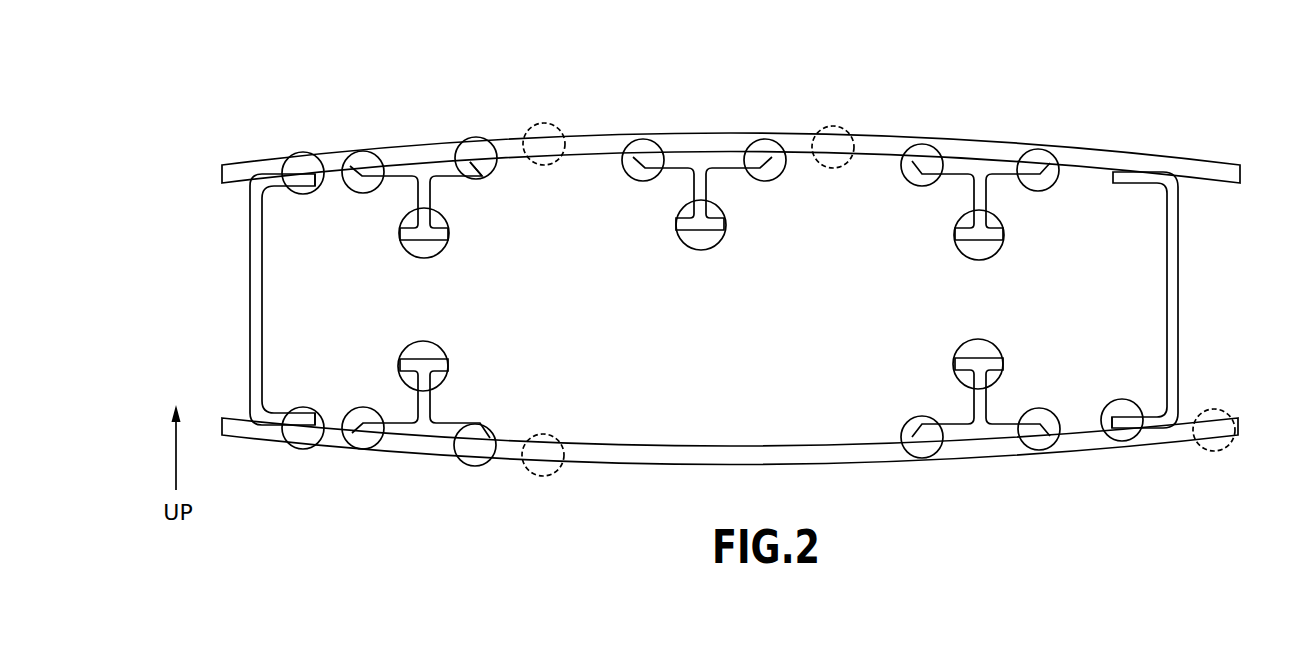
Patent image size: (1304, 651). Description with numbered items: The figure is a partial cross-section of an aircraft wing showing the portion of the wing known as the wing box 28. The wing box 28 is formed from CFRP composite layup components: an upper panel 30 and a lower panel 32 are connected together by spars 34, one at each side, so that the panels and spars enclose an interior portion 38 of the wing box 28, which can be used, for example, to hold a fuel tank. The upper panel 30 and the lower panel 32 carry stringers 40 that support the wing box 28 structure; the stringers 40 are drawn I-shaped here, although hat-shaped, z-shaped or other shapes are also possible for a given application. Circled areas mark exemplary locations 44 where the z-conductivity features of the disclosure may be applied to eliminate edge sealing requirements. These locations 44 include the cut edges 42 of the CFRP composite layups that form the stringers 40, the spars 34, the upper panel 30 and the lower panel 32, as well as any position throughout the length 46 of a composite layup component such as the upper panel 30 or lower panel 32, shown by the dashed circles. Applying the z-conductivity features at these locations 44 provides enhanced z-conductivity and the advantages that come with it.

The wing box 28 is at (872, 48).
The upper panel 30 is at (598, 141).
The lower panel 32 is at (857, 479).
The spars 34 is at (252, 306).
The interior portion 38 is at (1073, 202).
The stringers 40 is at (418, 194).
The cut edges 42 is at (482, 145).
The exemplary locations 44 is at (293, 162).
The length 46 is at (545, 124).